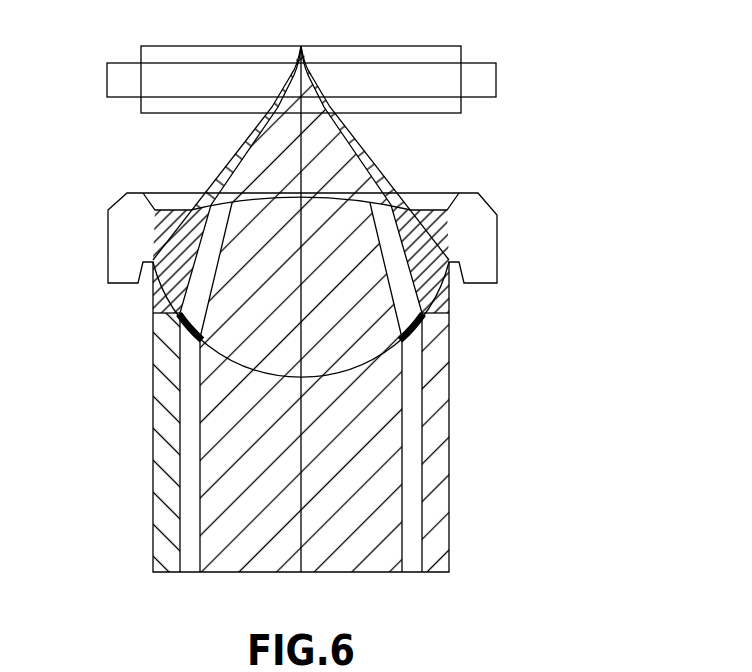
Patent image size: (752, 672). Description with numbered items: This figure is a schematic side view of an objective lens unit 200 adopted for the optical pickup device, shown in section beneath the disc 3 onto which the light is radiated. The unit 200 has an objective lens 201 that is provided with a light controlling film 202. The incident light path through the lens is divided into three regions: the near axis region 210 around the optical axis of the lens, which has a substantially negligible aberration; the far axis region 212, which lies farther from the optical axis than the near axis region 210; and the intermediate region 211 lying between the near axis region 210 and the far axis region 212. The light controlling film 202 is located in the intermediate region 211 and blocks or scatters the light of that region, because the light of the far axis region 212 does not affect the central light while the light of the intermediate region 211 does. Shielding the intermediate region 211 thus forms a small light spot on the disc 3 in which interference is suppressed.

The disc 3 is at (498, 85).
The objective lens unit 200 is at (497, 215).
The objective lens 201 is at (490, 244).
The light controlling film 202 is at (426, 338).
The near axis region 210 is at (391, 579).
The intermediate region 211 is at (200, 579).
The far axis region 212 is at (181, 579).